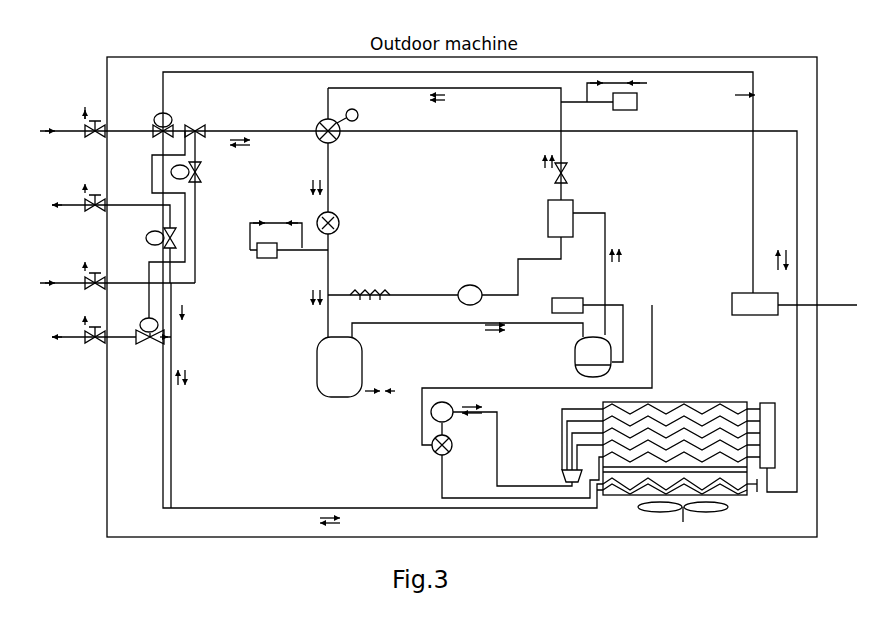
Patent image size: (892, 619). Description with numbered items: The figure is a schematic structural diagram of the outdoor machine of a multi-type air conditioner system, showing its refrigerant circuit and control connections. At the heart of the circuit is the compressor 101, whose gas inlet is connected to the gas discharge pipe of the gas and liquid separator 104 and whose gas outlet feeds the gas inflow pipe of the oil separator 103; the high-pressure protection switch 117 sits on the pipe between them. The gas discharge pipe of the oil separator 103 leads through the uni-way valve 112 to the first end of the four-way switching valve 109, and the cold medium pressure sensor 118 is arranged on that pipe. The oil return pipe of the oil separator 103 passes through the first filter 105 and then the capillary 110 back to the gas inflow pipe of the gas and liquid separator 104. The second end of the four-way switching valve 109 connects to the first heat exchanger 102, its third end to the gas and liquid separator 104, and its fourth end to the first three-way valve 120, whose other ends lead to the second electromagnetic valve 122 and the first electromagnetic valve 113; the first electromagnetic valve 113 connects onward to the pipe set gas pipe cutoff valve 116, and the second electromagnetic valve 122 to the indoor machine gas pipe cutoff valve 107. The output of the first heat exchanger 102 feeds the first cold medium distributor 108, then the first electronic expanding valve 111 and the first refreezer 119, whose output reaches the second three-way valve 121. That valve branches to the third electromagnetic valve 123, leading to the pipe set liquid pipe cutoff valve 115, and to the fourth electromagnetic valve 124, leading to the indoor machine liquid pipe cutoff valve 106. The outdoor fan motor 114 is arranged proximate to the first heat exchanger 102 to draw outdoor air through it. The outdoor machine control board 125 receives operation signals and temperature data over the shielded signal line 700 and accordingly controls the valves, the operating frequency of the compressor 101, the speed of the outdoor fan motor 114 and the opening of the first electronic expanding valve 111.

The compressor 101 is at (578, 366).
The first heat exchanger 102 is at (690, 402).
The oil separator 103 is at (548, 212).
The gas and liquid separator 104 is at (362, 380).
The first filter 105 is at (462, 288).
The indoor machine liquid pipe cutoff valve 106 is at (85, 334).
The indoor machine gas pipe cutoff valve 107 is at (85, 280).
The first cold medium distributor 108 is at (562, 470).
The four-way switching valve 109 is at (320, 124).
The capillary 110 is at (388, 292).
The first electronic expanding valve 111 is at (432, 445).
The uni-way valve 112 is at (566, 171).
The first electromagnetic valve 113 is at (156, 124).
The outdoor fan motor 114 is at (672, 510).
The pipe set liquid pipe cutoff valve 115 is at (85, 202).
The pipe set gas pipe cutoff valve 116 is at (85, 128).
The high-pressure protection switch 117 is at (565, 298).
The cold medium pressure sensor 118 is at (637, 100).
The first refreezer 119 is at (745, 488).
The first three-way valve 120 is at (197, 128).
The second three-way valve 121 is at (172, 337).
The second electromagnetic valve 122 is at (203, 176).
The third electromagnetic valve 123 is at (166, 234).
The fourth electromagnetic valve 124 is at (155, 346).
The outdoor machine control board 125 is at (735, 293).
The shielded signal line 700 is at (817, 295).